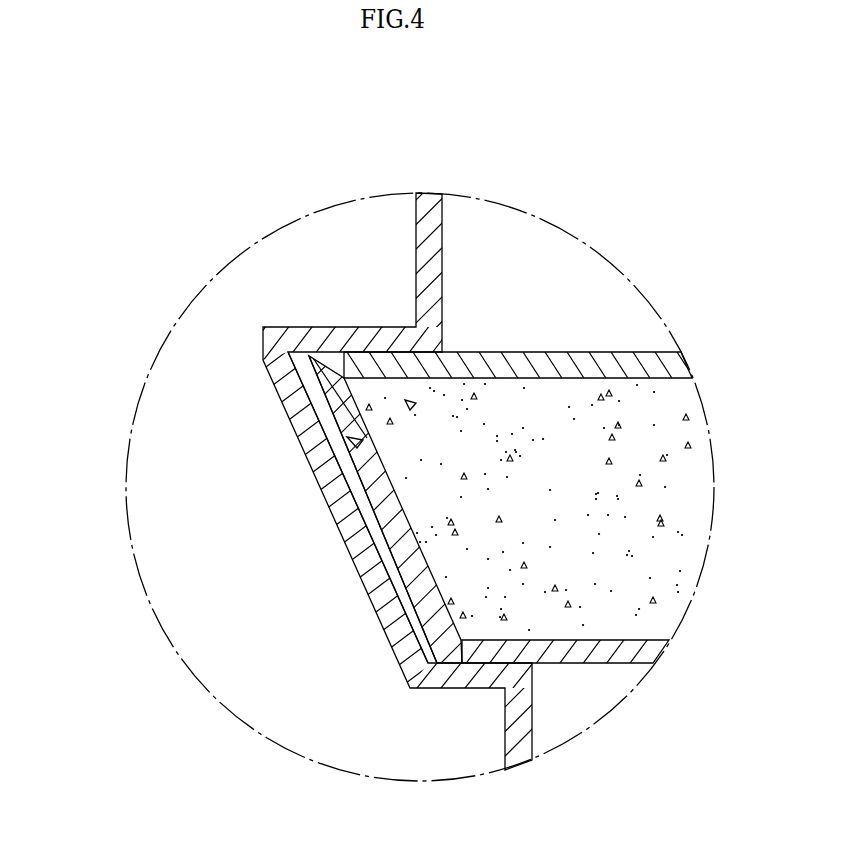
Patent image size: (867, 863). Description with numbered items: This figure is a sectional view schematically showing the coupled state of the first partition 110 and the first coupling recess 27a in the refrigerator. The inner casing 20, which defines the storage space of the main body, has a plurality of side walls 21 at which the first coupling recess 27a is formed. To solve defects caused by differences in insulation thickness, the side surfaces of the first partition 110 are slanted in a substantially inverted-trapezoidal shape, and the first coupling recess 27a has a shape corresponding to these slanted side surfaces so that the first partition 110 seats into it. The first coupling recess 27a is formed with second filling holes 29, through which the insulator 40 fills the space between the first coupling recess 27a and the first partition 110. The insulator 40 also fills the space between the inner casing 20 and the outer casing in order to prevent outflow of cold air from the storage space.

The inner casing 20 is at (433, 441).
The side walls 21 is at (415, 253).
The first partition 110 is at (634, 351).
The first coupling recess 27a is at (395, 582).
The second filling holes 29 is at (351, 536).
The insulator 40 is at (413, 405).